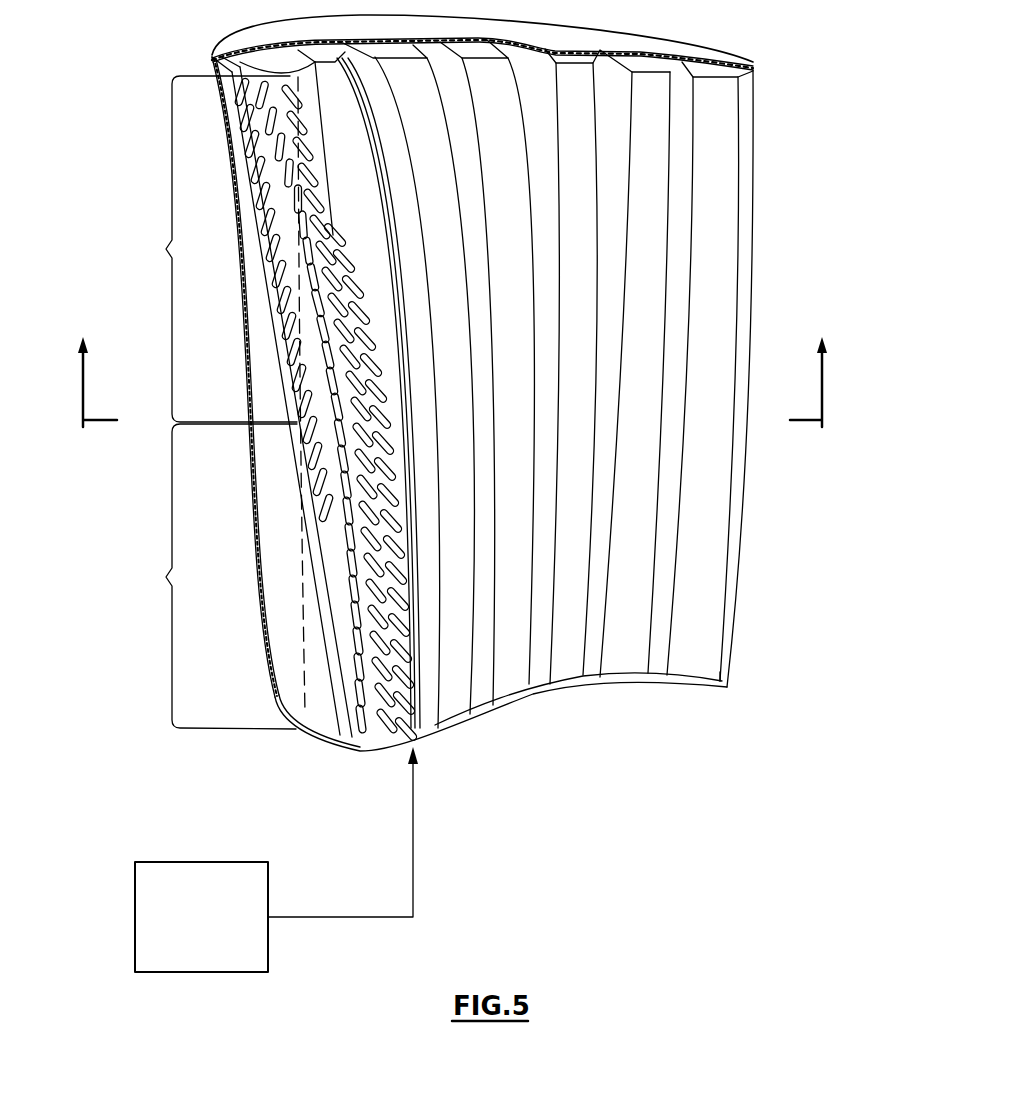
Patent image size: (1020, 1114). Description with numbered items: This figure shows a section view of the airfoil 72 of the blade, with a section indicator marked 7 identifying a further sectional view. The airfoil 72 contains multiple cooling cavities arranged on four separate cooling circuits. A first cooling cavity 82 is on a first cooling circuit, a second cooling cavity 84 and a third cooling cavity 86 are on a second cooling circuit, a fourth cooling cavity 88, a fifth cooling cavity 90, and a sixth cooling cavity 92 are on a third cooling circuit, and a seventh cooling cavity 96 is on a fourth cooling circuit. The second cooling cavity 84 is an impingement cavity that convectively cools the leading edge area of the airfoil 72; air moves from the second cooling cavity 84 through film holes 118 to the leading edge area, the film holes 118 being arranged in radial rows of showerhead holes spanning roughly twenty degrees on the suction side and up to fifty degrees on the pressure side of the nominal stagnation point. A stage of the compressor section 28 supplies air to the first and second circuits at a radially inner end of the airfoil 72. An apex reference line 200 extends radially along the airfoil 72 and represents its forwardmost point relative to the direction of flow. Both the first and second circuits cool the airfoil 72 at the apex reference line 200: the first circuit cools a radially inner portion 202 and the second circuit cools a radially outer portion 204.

The airfoil 72 is at (526, 418).
The first cooling cavity 82 is at (325, 702).
The second cooling cavity 84 is at (422, 680).
The third cooling cavity 86 is at (462, 698).
The fourth cooling cavity 88 is at (508, 680).
The fifth cooling cavity 90 is at (500, 690).
The sixth cooling cavity 92 is at (567, 663).
The seventh cooling cavity 96 is at (697, 628).
The film holes 118 is at (371, 752).
The apex reference line 200 is at (298, 287).
The radially inner portion 202 is at (211, 576).
The radially outer portion 204 is at (211, 249).
The compressor section 28 is at (217, 934).
The section view indicator 7 is at (453, 396).